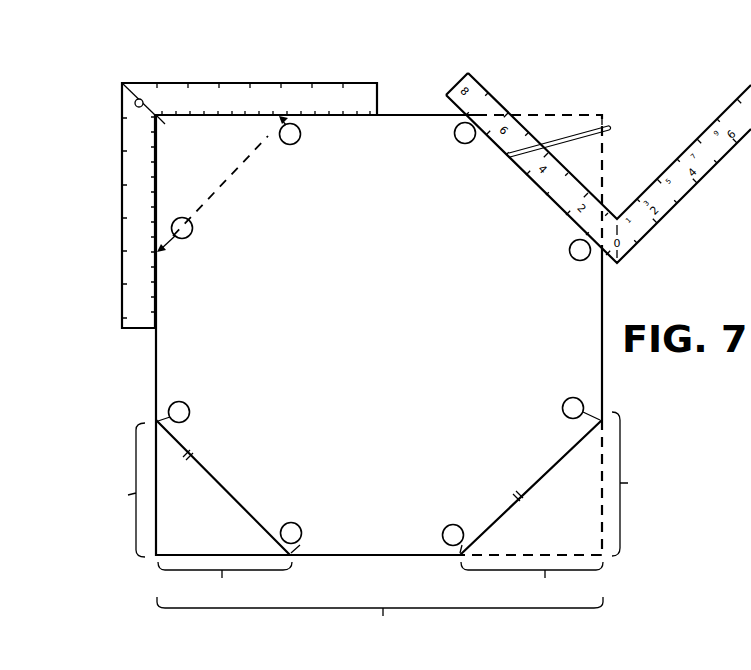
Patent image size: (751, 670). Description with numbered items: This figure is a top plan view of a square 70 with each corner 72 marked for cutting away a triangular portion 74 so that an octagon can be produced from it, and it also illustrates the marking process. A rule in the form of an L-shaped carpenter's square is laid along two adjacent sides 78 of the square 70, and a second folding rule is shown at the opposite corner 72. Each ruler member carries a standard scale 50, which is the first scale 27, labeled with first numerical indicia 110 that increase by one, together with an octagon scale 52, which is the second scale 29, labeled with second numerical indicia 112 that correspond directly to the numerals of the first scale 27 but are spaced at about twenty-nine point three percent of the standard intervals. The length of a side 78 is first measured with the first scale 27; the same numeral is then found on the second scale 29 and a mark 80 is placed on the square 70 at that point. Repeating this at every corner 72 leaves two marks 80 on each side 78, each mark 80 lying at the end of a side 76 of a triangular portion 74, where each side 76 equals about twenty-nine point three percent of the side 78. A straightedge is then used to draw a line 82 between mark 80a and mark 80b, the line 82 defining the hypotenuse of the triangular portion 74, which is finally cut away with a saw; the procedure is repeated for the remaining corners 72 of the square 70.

The first scale 27 is at (264, 205).
The standard measuring scale 50 is at (264, 205).
The second scale 29 is at (264, 205).
The octagon scale 52 is at (264, 191).
The first numerical indicia 110 is at (181, 91).
The second numerical indicia 112 is at (331, 103).
The square 70 is at (379, 335).
The corner 72 is at (159, 119).
The triangular portion 74 is at (393, 335).
The side of triangular portion 76 is at (128, 495).
The side of square 78 is at (380, 617).
The mark 80 is at (463, 120).
The mark 80a is at (160, 250).
The mark 80b is at (294, 120).
The line 82 is at (234, 177).